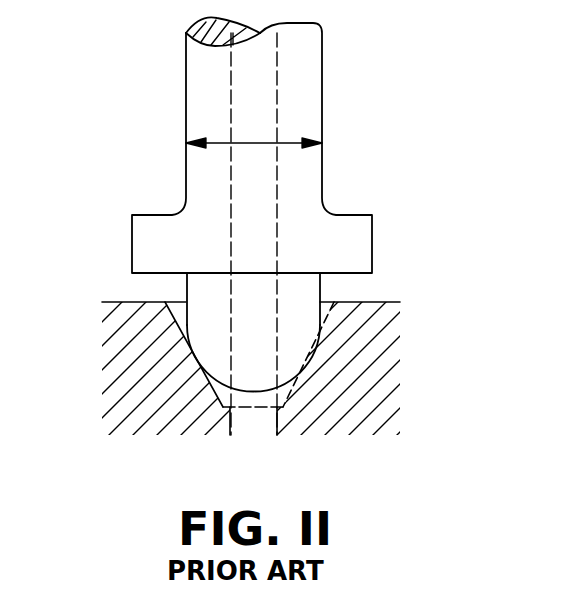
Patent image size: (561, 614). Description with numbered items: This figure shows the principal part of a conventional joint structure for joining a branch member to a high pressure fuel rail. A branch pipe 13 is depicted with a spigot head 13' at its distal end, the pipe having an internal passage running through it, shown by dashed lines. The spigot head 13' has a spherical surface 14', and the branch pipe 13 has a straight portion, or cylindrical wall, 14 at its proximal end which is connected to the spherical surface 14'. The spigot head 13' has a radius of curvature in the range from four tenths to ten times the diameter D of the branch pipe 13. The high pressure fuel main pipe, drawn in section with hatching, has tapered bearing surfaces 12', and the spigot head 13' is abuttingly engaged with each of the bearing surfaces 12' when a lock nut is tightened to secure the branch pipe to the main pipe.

The branch pipe 13 is at (279, 229).
The spigot head 13' is at (323, 358).
The tapered bearing surfaces 12' is at (271, 365).
The straight portion 14 is at (190, 354).
The spherical surface 14' is at (163, 390).